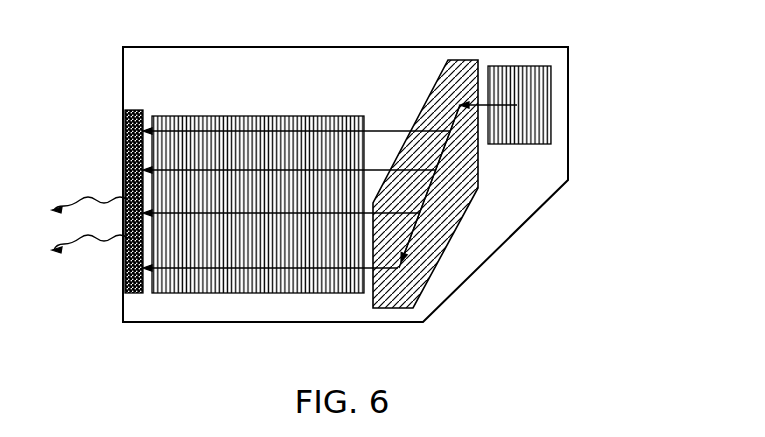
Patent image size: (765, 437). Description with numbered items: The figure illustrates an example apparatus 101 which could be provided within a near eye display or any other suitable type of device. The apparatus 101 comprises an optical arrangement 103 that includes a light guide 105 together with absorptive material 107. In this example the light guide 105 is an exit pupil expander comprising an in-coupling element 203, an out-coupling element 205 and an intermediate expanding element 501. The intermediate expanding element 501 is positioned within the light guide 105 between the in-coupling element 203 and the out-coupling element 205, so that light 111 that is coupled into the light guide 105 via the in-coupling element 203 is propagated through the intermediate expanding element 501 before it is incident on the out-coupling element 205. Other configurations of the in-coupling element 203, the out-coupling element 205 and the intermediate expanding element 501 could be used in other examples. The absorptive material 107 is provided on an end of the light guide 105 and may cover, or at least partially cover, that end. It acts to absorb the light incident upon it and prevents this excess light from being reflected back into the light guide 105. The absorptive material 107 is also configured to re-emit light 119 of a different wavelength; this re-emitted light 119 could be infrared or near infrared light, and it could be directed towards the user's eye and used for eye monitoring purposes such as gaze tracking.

The apparatus 101 is at (518, 27).
The optical arrangement 103 is at (397, 323).
The light guide 105 is at (568, 108).
The absorptive material 107 is at (126, 158).
The light 111 is at (370, 131).
The re-emitted light 119 is at (97, 250).
The in-coupling element 203 is at (525, 144).
The out-coupling element 205 is at (300, 293).
The intermediate expanding element 501 is at (457, 197).